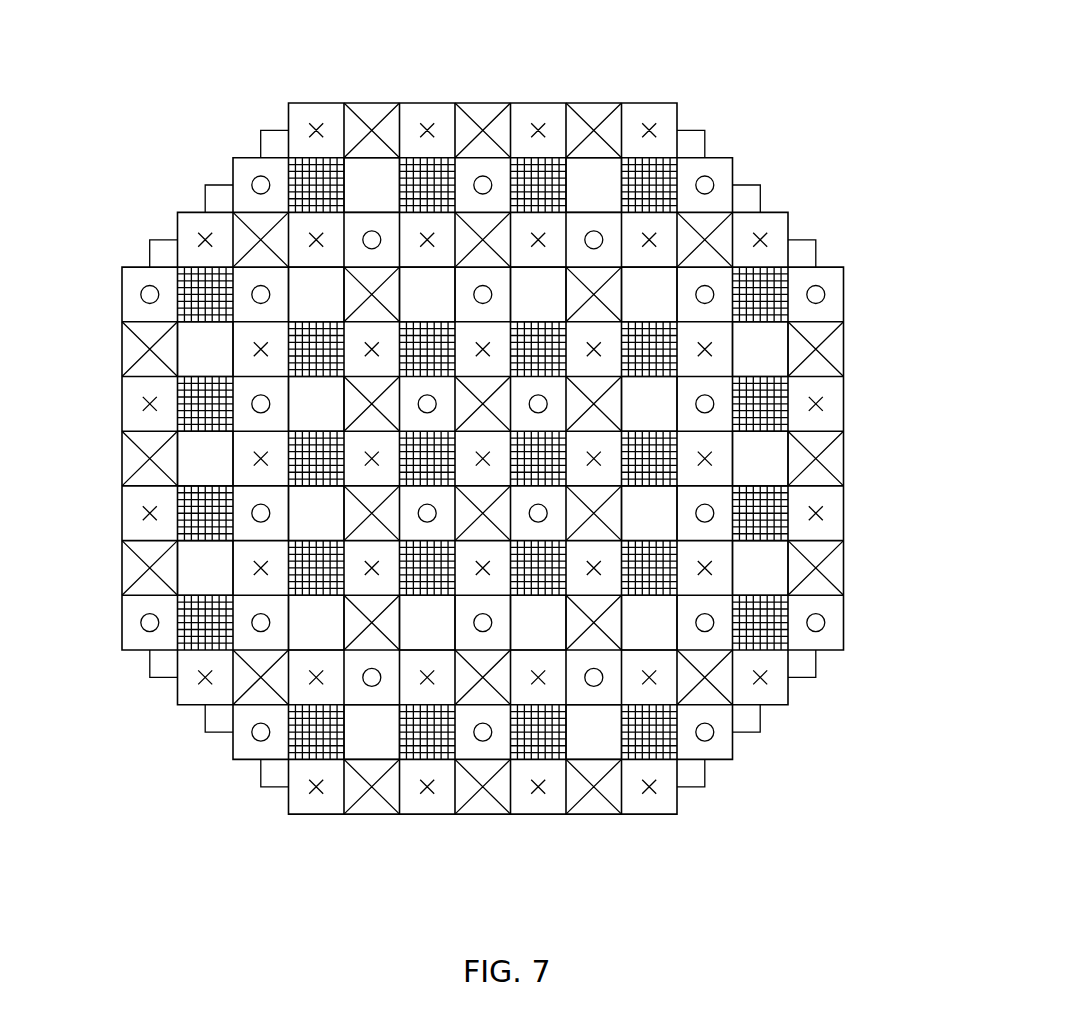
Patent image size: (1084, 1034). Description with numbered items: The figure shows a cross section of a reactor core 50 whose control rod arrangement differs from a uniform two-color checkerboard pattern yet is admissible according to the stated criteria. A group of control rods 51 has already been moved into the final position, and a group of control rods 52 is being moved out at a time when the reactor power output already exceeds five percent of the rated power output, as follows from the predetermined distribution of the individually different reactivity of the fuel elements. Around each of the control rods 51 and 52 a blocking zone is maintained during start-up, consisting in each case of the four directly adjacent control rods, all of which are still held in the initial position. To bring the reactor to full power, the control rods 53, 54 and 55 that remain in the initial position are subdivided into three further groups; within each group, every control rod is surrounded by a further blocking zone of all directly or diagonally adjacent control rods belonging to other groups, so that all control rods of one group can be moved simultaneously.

The core 50 is at (848, 498).
The group of control rods 51 is at (780, 525).
The group of control rods 52 is at (494, 109).
The control rods 53 is at (535, 809).
The control rods 54 is at (716, 642).
The control rods 55 is at (295, 636).